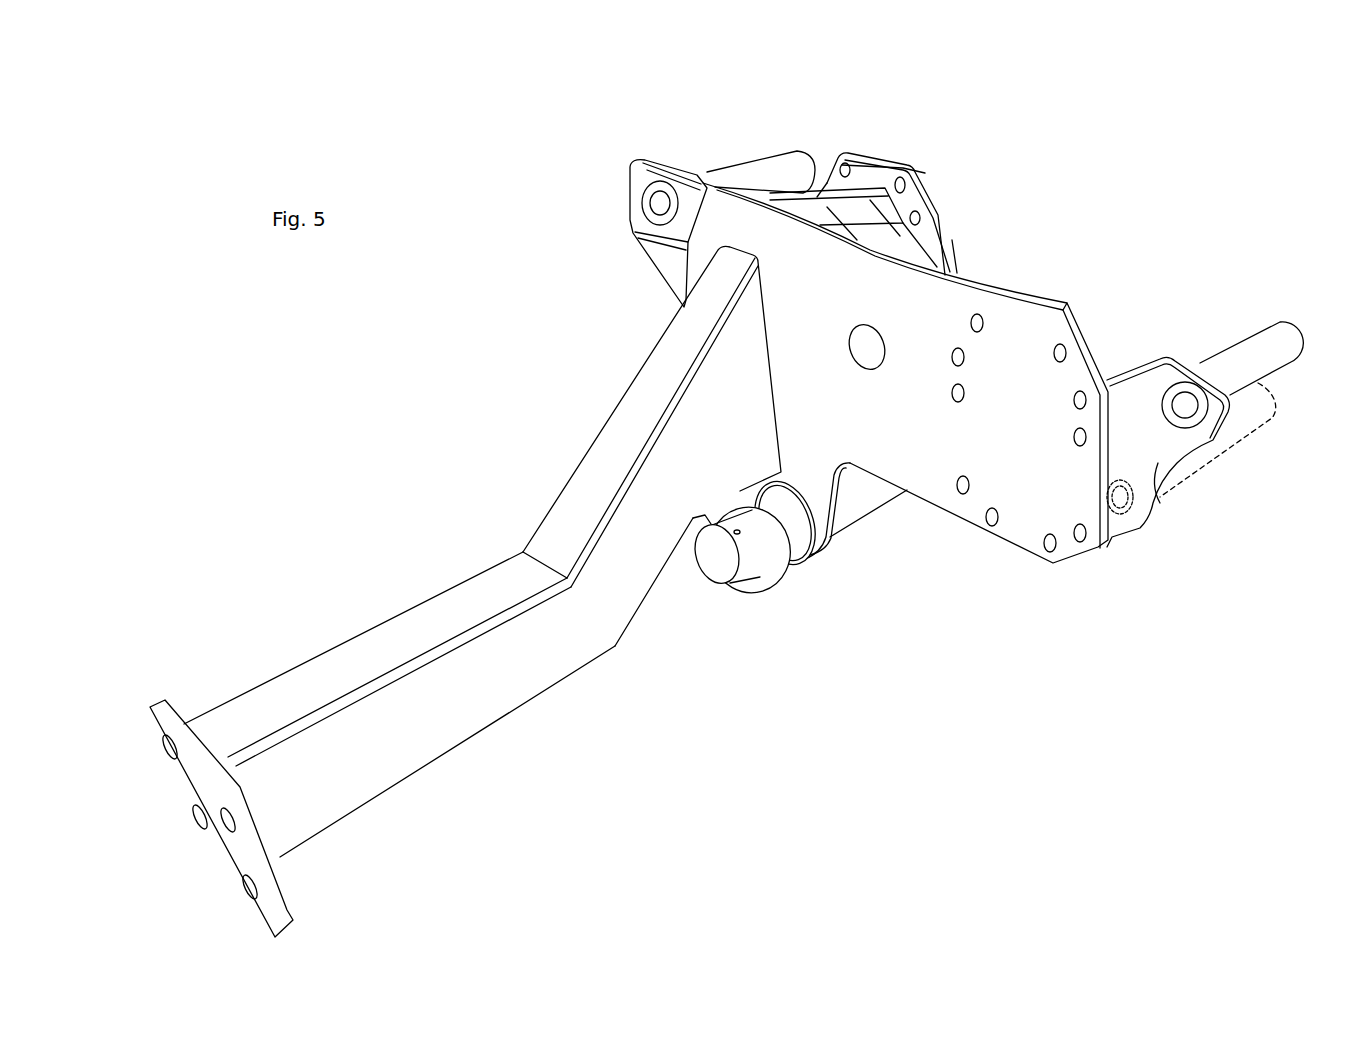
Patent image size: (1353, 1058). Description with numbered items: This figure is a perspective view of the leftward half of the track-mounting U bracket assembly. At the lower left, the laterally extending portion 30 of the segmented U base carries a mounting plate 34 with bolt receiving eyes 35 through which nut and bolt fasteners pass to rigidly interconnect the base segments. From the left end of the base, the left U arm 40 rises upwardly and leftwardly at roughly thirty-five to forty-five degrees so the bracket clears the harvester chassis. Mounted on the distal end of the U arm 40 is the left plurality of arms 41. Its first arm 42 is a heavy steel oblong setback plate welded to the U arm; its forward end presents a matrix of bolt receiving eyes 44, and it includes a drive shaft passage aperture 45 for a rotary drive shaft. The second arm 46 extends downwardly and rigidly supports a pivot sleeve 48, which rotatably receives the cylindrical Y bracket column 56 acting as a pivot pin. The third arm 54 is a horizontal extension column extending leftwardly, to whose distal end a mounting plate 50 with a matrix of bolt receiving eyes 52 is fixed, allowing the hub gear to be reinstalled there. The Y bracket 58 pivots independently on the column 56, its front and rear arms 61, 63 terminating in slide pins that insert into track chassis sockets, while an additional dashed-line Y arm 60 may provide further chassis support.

The laterally extending portion 30 is at (420, 630).
The mounting plate 34 is at (178, 720).
The bolt receiving eyes 35 is at (193, 812).
The left U arm 40 is at (628, 420).
The left plurality of arms 41 is at (837, 140).
The first arm (rear setback arm) 42 is at (965, 275).
The bolt receiving eyes 44 is at (1048, 548).
The drive shaft passage aperture 45 is at (864, 352).
The second arm (downward extension arm) 46 is at (827, 550).
The pivot sleeve 48 is at (850, 512).
The mounting plate 50 is at (893, 157).
The bolt receiving eyes 52 is at (817, 160).
The third arm (horizontal extension arm) 54 is at (857, 195).
The Y bracket column (pivot pin) 56 is at (717, 567).
The Y bracket 58 is at (1157, 500).
The additional Y arm 60 is at (1250, 423).
The front Y arm (slide pin) 61 is at (716, 168).
The rear Y arm (slide pin) 63 is at (1242, 352).